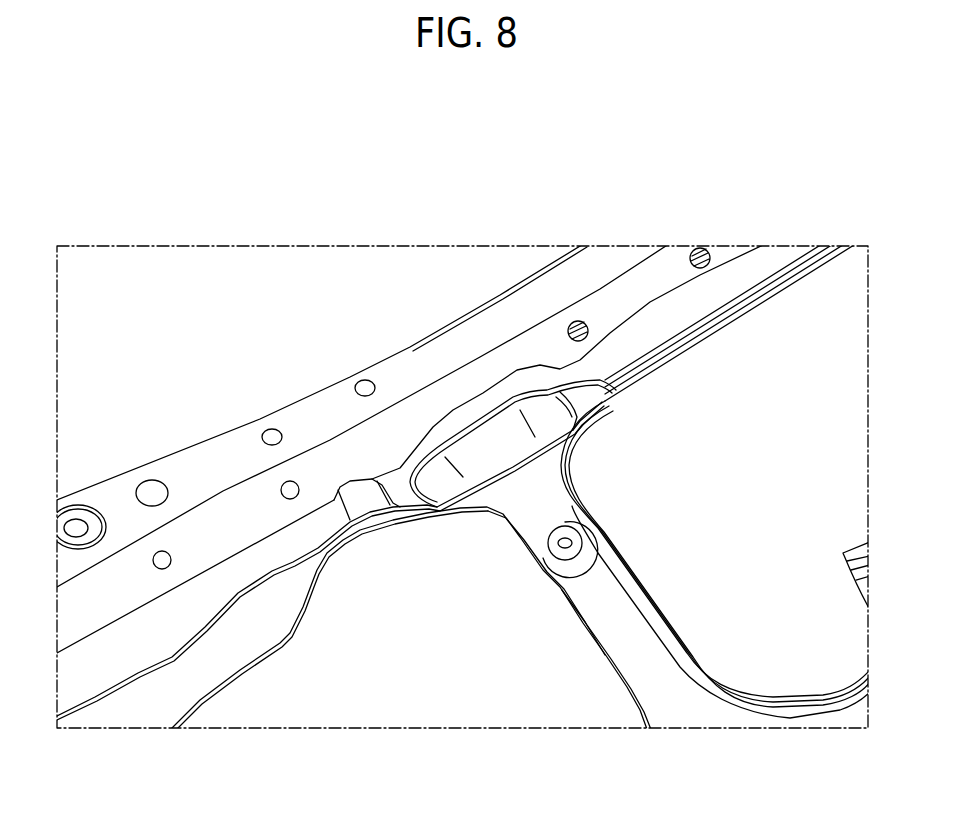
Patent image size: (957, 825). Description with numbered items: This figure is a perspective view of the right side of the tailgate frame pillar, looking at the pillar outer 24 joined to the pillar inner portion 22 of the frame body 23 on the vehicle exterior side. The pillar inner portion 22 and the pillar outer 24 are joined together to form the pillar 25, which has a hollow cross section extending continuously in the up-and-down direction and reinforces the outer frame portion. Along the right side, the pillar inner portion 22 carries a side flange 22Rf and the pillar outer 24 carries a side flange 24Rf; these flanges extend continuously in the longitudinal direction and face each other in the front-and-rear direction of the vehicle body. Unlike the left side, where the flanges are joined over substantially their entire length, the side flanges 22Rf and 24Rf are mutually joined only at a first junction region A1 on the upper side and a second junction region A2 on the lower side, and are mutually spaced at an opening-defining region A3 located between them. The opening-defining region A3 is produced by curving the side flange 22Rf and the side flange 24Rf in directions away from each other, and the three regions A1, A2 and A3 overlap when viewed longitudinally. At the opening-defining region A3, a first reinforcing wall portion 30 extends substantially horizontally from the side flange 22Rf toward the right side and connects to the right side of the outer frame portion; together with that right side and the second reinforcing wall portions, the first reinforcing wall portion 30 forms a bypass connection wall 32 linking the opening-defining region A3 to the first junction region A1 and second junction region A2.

The pillar inner portion 22 is at (606, 402).
The frame body 23 is at (606, 402).
The pillar outer 24 is at (598, 273).
The pillar 25 is at (478, 298).
The first reinforcing wall portion 30 is at (607, 620).
The bypass connection wall 32 is at (607, 620).
The side flange 24Rf is at (215, 593).
The side flange 22Rf is at (285, 572).
The first junction region A1 is at (688, 305).
The second junction region A2 is at (118, 653).
The opening-defining region A3 is at (462, 408).